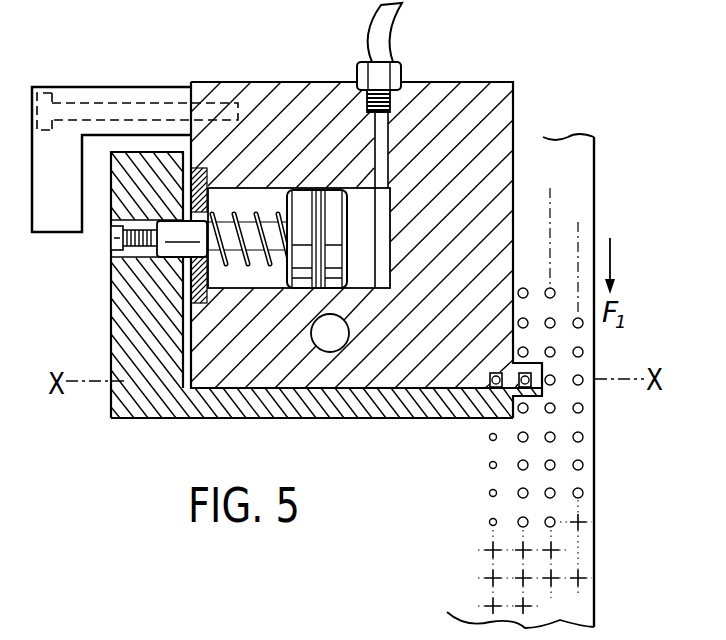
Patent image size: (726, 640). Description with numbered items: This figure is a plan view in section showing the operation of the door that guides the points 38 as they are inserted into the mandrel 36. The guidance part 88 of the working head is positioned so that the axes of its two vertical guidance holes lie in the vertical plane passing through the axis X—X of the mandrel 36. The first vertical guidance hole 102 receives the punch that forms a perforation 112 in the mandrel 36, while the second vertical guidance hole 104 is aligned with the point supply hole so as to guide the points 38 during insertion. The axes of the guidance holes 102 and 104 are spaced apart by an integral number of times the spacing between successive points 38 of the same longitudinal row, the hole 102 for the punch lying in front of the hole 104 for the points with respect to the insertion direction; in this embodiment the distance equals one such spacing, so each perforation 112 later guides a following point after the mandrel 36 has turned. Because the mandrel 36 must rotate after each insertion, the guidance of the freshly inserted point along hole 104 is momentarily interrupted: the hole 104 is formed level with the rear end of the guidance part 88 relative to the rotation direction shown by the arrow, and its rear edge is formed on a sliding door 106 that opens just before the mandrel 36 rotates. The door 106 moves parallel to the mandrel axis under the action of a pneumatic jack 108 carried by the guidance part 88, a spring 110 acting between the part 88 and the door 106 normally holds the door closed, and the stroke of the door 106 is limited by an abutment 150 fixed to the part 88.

The mandrel 36 is at (571, 613).
The points 38 is at (528, 463).
The guidance part 88 is at (474, 100).
The first vertical guidance hole 102 is at (482, 378).
The second vertical guidance hole 104 is at (510, 368).
The sliding door 106 is at (160, 400).
The pneumatic jack 108 is at (330, 205).
The spring 110 is at (232, 210).
The perforation 112 is at (523, 347).
The abutment 150 is at (63, 215).